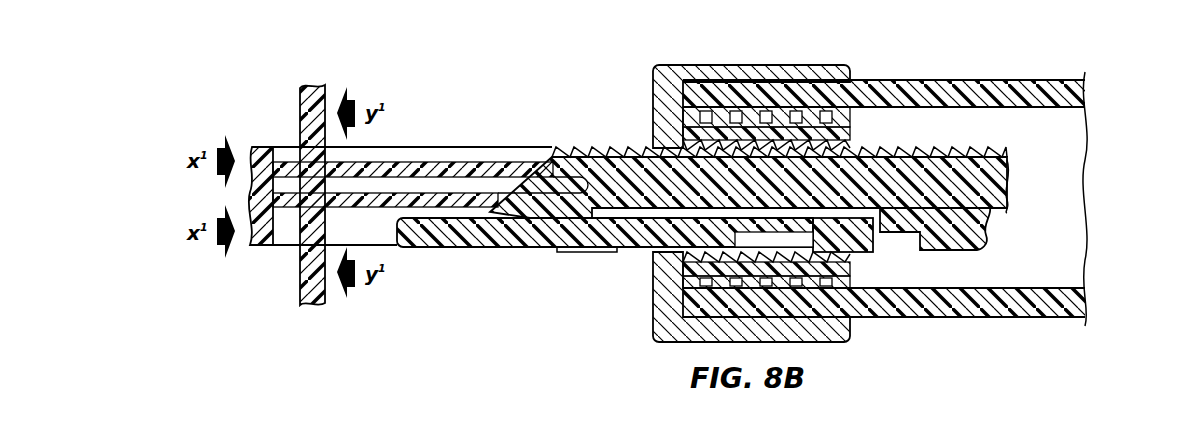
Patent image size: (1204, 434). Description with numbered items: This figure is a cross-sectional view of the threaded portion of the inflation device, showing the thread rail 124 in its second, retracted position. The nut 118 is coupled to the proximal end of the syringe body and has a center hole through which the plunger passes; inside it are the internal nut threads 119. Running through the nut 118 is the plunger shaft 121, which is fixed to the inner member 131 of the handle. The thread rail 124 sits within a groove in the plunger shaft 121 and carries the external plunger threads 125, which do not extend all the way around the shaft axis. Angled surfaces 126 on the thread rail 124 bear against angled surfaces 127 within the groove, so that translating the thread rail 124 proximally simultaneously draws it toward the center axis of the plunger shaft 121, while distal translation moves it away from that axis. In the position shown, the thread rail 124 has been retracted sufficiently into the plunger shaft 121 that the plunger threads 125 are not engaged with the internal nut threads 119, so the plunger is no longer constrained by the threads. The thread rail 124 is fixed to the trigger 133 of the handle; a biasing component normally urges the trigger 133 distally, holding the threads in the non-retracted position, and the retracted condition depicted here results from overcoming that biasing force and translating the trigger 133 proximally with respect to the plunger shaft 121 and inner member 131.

The nut 118 is at (723, 65).
The internal nut threads 119 is at (787, 135).
The plunger shaft 121 is at (380, 233).
The thread rail 124 is at (940, 178).
The plunger threads 125 is at (643, 150).
The angled surfaces on the thread rail 126 is at (863, 150).
The angled surfaces within the groove 127 is at (527, 227).
The inner member 131 is at (258, 152).
The trigger 133 is at (322, 92).